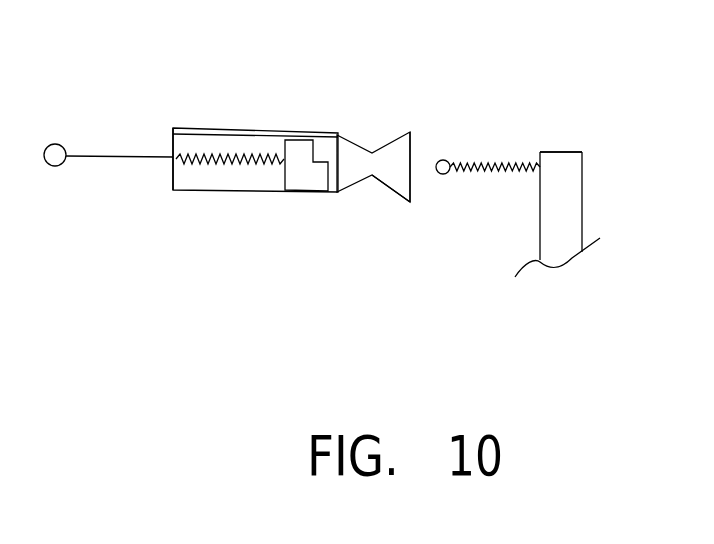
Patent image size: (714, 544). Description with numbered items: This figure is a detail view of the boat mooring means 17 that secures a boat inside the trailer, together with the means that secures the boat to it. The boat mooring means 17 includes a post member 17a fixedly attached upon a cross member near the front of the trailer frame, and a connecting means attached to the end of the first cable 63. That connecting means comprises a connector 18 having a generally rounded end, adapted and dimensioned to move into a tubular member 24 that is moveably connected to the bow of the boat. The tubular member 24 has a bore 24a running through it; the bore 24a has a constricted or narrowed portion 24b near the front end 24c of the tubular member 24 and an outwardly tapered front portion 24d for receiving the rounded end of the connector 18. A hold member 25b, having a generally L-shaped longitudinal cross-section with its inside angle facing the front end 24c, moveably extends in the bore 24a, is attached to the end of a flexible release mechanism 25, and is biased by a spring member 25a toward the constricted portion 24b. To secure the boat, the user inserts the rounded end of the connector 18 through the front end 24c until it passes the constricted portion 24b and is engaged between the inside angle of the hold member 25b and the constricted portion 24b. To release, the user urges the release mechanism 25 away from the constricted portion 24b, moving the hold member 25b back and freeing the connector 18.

The boat mooring means 17 is at (566, 113).
The post member 17a is at (565, 177).
The connector 18 is at (443, 160).
The tubular member 24 is at (220, 128).
The bore 24a is at (173, 138).
The constricted portion 24b is at (350, 142).
The front end 24c is at (417, 186).
The outwardly tapered front portion 24d is at (395, 192).
The flexible release mechanism 25 is at (112, 158).
The spring member 25a is at (173, 170).
The hold member 25b is at (298, 183).
The first cable 63 is at (527, 180).